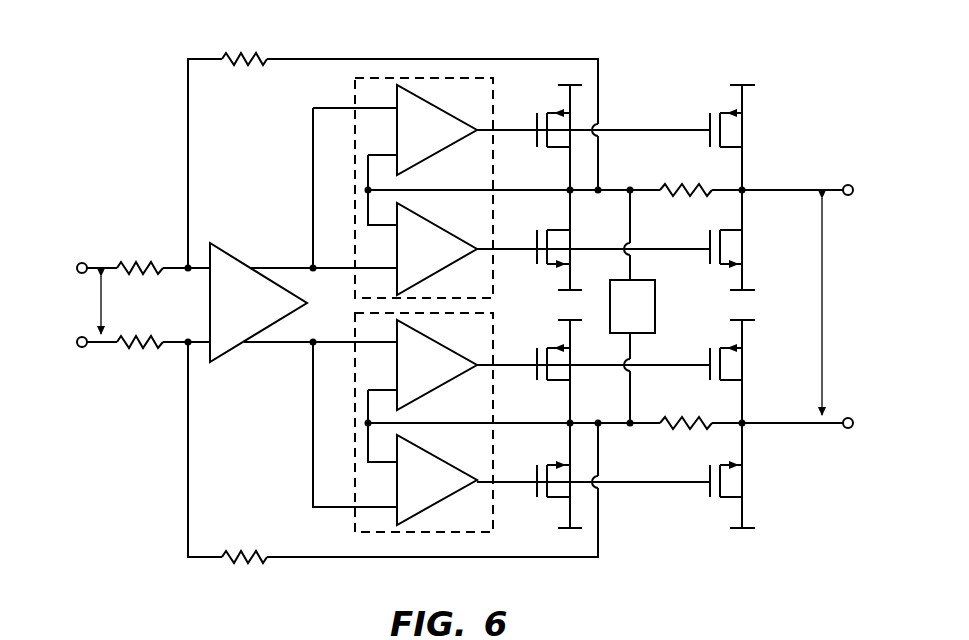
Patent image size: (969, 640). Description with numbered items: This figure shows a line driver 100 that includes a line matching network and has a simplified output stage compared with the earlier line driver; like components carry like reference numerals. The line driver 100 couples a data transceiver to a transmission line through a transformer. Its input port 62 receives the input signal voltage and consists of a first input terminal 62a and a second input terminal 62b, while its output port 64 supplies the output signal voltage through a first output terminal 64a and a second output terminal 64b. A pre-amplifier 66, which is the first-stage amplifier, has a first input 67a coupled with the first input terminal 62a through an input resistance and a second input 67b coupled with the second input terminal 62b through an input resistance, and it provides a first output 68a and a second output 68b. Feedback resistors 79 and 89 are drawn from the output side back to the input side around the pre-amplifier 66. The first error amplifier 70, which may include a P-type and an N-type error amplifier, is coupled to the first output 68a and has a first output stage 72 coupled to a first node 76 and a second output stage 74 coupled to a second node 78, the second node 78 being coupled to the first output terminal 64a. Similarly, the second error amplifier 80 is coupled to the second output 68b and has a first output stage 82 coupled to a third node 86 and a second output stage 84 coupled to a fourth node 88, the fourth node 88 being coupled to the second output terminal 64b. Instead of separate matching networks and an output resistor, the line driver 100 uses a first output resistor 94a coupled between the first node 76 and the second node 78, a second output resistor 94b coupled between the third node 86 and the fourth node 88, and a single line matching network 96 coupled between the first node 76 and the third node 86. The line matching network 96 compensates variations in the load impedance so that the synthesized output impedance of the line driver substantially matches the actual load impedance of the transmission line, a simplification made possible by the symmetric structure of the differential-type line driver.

The line driver 100 is at (576, 30).
The input port 62 is at (116, 428).
The first input terminal 62a is at (82, 262).
The second input terminal 62b is at (82, 348).
The output port 64 is at (842, 464).
The first output terminal 64a is at (847, 184).
The second output terminal 64b is at (847, 428).
The pre-amplifier 66 is at (222, 250).
The first input 67a is at (188, 262).
The second input 67b is at (188, 348).
The first output 68a is at (313, 262).
The second output 68b is at (313, 348).
The first error amplifier 70 is at (493, 97).
The first output stage 72 is at (562, 152).
The second output stage 74 is at (735, 152).
The first node 76 is at (600, 187).
The second node 78 is at (745, 193).
The feedback resistor Rf 79 is at (315, 59).
The second error amplifier 80 is at (493, 503).
The first output stage 82 is at (563, 386).
The second output stage 84 is at (735, 386).
The third node 86 is at (600, 428).
The fourth node 88 is at (745, 420).
The feedback resistor Rf 89 is at (353, 557).
The first output resistor 94a is at (683, 198).
The second output resistor 94b is at (683, 433).
The line matching network 96 is at (656, 305).